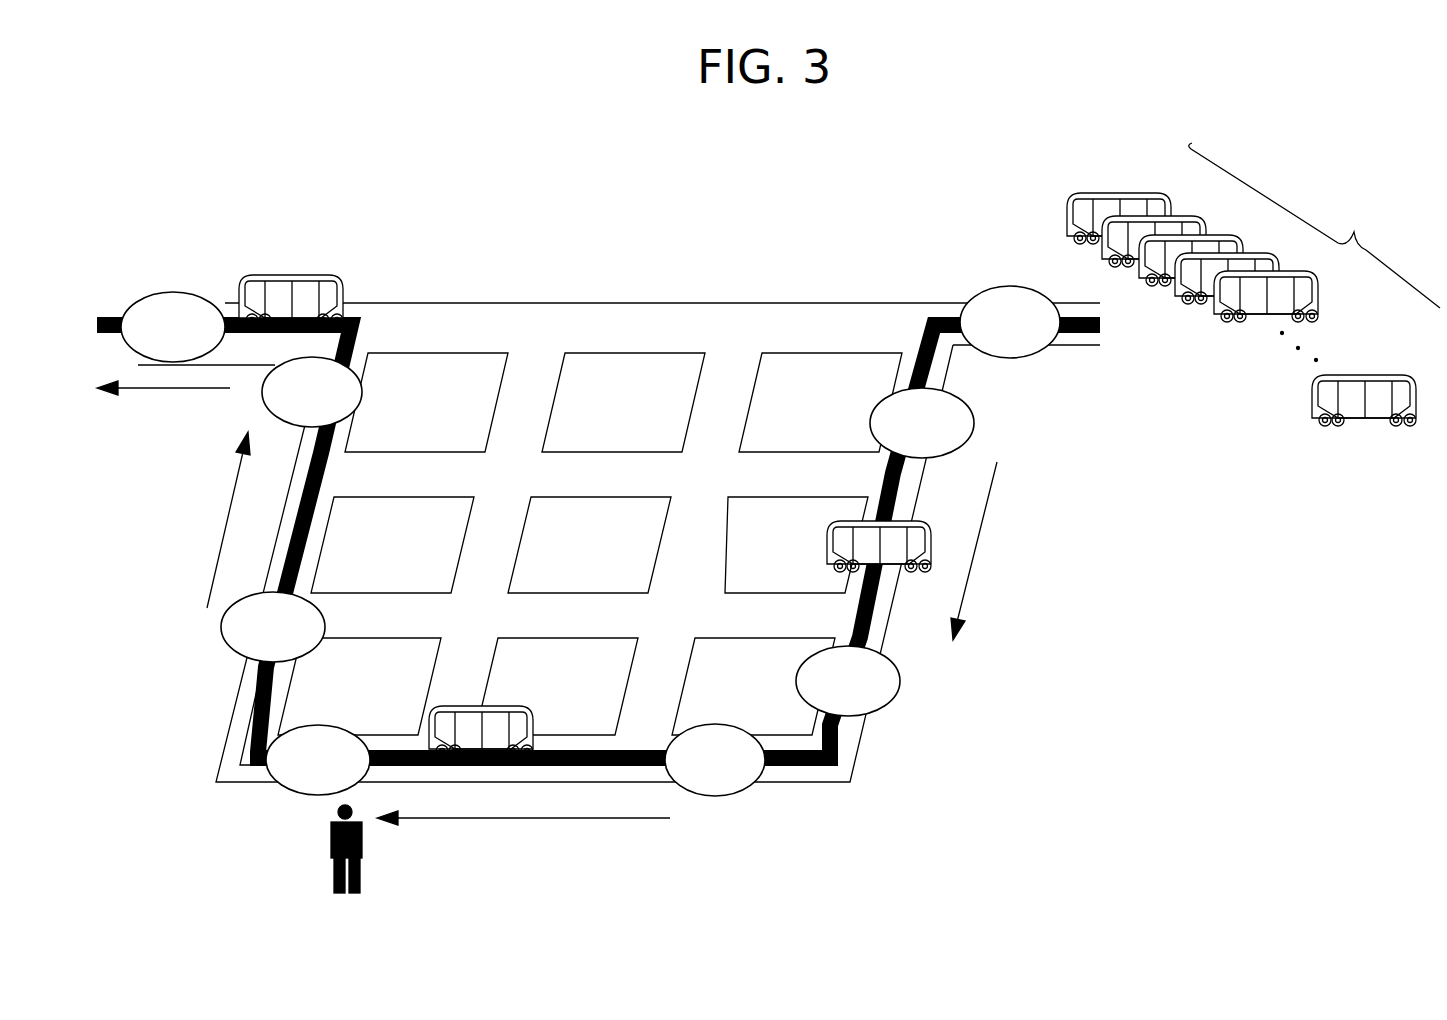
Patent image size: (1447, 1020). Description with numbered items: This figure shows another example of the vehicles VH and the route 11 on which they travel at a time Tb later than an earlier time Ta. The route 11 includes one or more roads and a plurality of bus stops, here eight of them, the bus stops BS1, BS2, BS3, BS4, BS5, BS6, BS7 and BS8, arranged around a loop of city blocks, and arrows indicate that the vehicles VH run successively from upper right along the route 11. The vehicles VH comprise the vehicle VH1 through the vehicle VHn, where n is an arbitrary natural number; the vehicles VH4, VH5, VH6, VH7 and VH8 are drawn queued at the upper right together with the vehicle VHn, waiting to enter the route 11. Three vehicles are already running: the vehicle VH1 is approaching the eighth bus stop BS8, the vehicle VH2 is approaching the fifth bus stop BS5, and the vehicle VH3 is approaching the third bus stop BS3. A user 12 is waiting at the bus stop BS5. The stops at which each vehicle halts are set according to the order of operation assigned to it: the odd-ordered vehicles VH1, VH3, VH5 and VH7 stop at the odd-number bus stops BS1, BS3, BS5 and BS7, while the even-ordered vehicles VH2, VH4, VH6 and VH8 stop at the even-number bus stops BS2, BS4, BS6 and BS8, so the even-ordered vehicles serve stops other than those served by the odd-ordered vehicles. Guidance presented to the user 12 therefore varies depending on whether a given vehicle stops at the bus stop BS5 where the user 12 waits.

The route 11 is at (802, 768).
The user 12 is at (366, 866).
The bus stop BS1 is at (1007, 287).
The bus stop BS2 is at (974, 423).
The bus stop BS3 is at (900, 683).
The bus stop BS4 is at (710, 797).
The bus stop BS5 is at (286, 791).
The bus stop BS6 is at (222, 634).
The bus stop BS7 is at (262, 393).
The bus stop BS8 is at (172, 292).
The vehicles VH is at (1314, 252).
The vehicle VH1 is at (297, 272).
The vehicle VH2 is at (528, 707).
The vehicle VH3 is at (828, 538).
The vehicle VH4 is at (1168, 202).
The vehicle VH5 is at (1204, 222).
The vehicle VH6 is at (1243, 240).
The vehicle VH7 is at (1280, 258).
The vehicle VH8 is at (1320, 292).
The vehicle VHn is at (1370, 372).